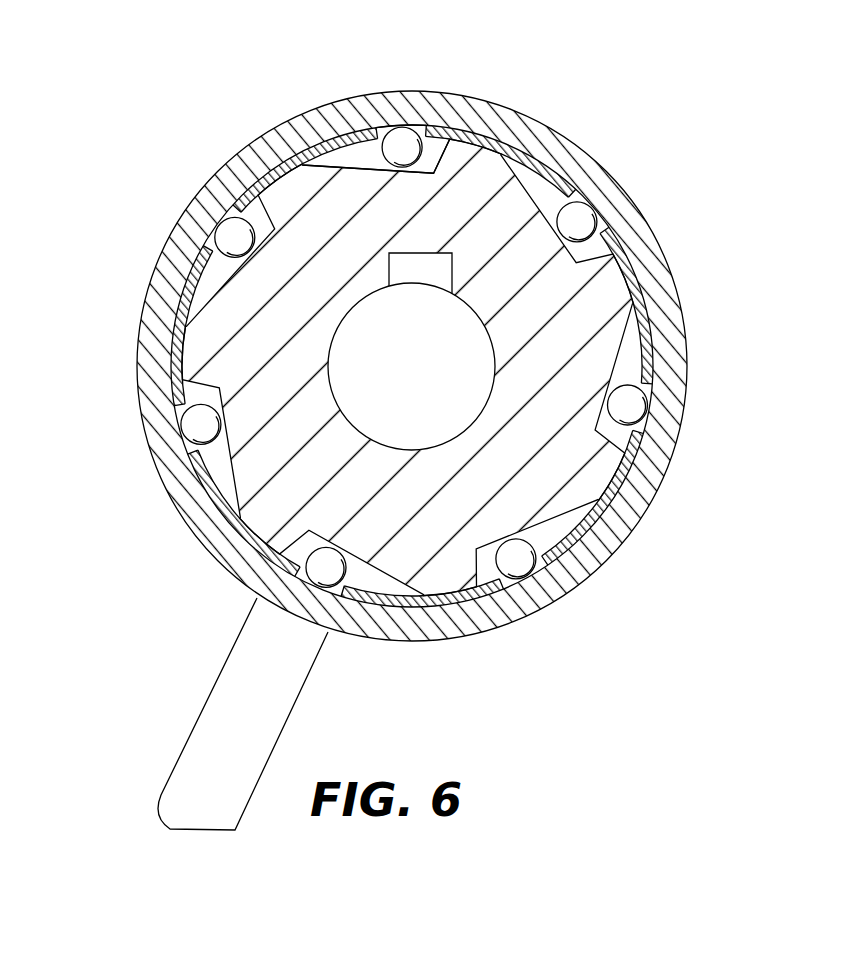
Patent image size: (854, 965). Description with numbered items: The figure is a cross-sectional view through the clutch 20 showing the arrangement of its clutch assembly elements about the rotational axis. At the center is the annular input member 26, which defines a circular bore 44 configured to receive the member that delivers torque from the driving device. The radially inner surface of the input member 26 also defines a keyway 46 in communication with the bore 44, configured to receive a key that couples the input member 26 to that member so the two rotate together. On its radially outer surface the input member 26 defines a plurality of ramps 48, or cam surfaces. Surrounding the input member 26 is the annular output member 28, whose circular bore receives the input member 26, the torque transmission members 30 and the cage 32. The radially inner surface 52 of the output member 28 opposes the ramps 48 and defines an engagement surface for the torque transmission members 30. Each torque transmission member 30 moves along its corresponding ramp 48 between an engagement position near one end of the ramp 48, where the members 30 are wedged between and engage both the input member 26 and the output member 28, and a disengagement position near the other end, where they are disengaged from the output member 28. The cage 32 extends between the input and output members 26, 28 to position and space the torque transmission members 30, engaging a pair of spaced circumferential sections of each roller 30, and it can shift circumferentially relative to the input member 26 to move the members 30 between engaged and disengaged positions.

The clutch 20 is at (145, 95).
The input member 26 is at (557, 472).
The output member 28 is at (683, 323).
The torque transmission members 30 is at (523, 560).
The cage 32 is at (435, 600).
The circular bore 44 is at (390, 402).
The keyway 46 is at (427, 263).
The ramps 48 is at (363, 168).
The radially inner surface 52 is at (372, 125).